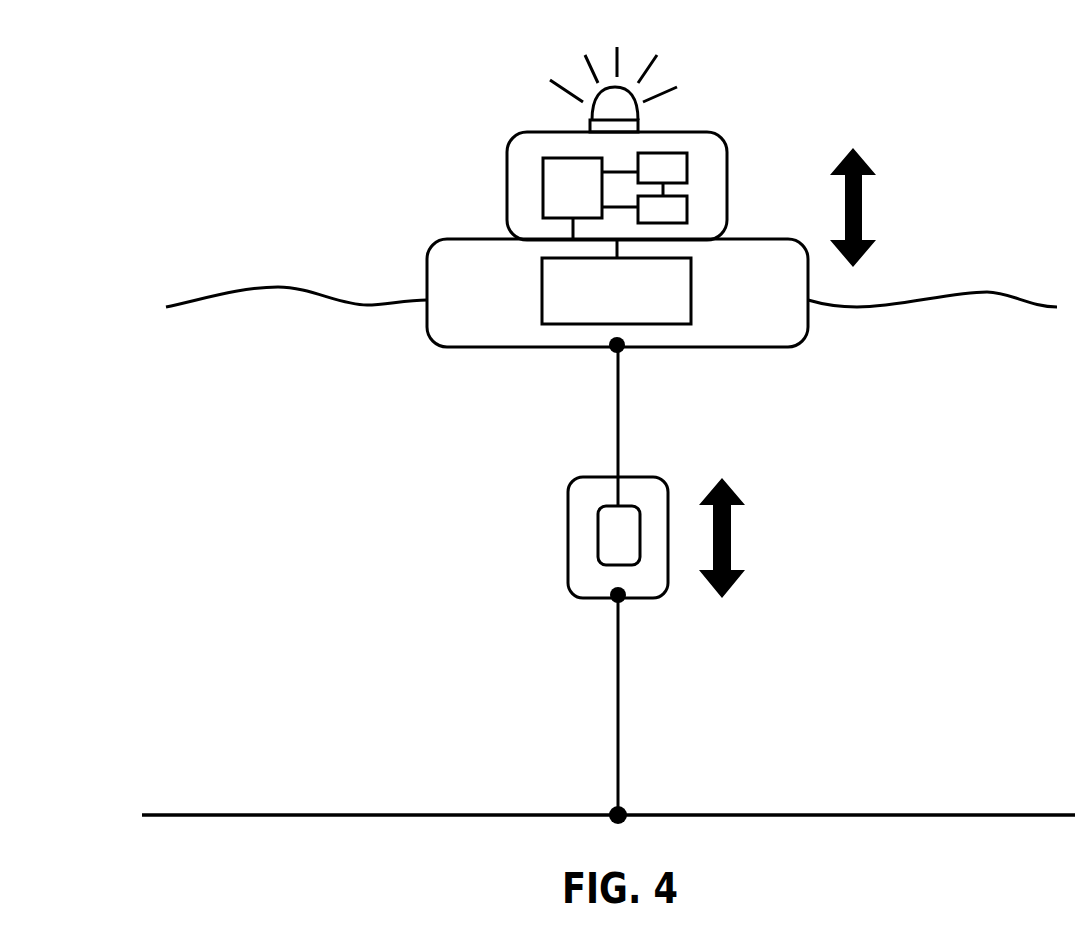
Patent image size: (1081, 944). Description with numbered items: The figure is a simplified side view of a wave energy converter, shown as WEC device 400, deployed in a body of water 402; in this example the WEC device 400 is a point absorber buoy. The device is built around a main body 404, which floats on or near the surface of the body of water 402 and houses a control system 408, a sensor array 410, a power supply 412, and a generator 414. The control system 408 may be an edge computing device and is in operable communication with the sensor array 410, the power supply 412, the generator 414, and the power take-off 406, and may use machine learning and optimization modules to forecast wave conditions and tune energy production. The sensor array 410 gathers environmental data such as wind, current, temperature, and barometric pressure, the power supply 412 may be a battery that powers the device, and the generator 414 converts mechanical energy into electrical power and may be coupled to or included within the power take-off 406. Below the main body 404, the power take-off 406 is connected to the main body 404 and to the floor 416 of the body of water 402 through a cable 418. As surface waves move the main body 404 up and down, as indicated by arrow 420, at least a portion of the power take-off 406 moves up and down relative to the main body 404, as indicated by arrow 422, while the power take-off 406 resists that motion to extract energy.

The WEC device 400 is at (187, 67).
The body of water 402 is at (278, 287).
The main body 404 is at (427, 253).
The power take-off 406 is at (568, 538).
The control system 408 is at (543, 197).
The sensor array 410 is at (687, 165).
The power supply 412 is at (687, 212).
The generator 414 is at (691, 293).
The floor 416 is at (397, 815).
The cable 418 is at (618, 430).
The arrow 420 is at (862, 212).
The arrow 422 is at (732, 543).